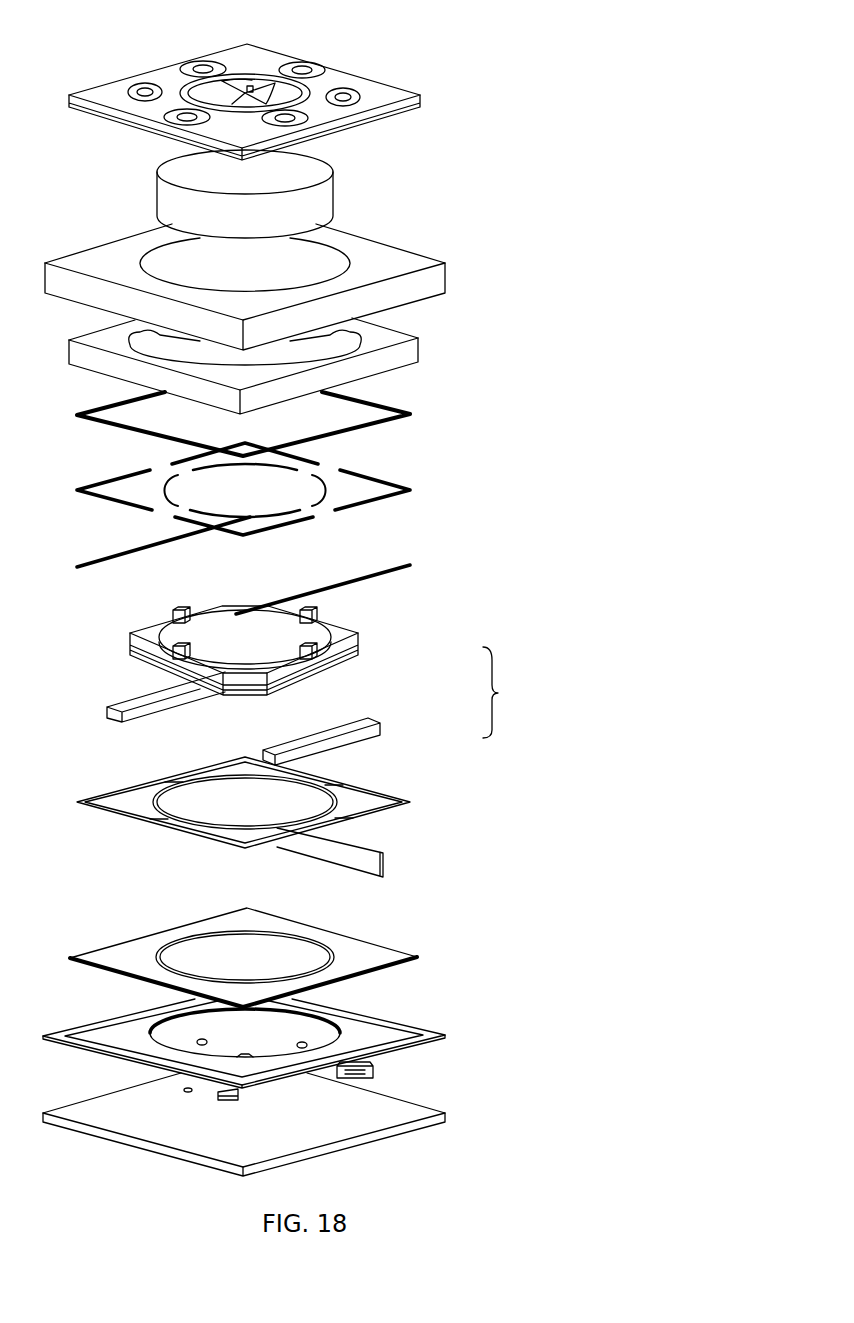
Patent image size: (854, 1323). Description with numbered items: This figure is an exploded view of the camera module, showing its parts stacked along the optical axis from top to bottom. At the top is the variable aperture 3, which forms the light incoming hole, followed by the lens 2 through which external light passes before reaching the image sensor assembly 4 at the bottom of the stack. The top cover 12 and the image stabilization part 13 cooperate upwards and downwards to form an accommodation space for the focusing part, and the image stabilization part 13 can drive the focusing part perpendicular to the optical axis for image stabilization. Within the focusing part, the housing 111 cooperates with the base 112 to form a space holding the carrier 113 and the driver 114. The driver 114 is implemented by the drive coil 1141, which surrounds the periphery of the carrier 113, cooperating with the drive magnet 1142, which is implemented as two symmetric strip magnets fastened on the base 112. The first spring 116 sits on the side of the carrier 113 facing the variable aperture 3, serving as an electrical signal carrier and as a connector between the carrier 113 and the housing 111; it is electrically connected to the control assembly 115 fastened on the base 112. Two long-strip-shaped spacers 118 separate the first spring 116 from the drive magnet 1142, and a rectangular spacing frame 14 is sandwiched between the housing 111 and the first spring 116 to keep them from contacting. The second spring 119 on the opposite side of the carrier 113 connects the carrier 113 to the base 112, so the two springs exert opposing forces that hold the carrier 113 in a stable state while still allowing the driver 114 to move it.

The variable aperture 3 is at (395, 98).
The lens 2 is at (322, 200).
The top cover 12 is at (392, 264).
The housing 111 is at (410, 352).
The spacing frame 14 is at (410, 415).
The first spring 116 is at (410, 491).
The spacer 118 is at (410, 566).
The carrier 113 is at (358, 638).
The drive coil 1141 is at (355, 655).
The driver 114 is at (516, 692).
The drive magnet 1142 is at (378, 727).
The second spring 119 is at (410, 803).
The control assembly 115 is at (360, 863).
The base 112 is at (370, 958).
The image stabilization part 13 is at (410, 1037).
The image sensor assembly 4 is at (380, 1117).